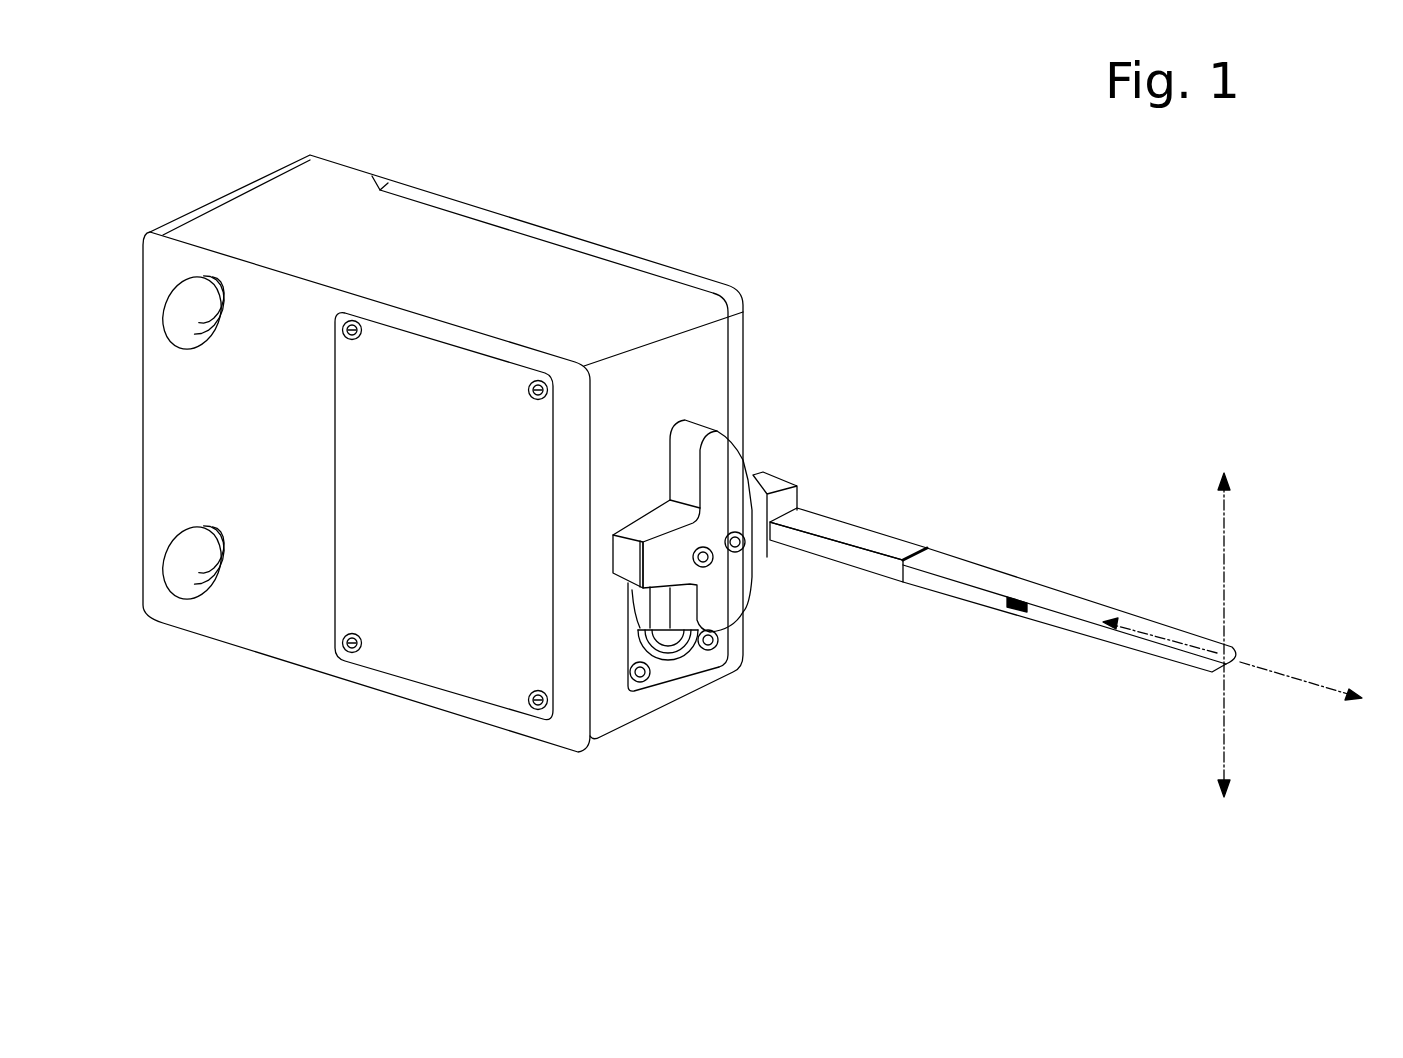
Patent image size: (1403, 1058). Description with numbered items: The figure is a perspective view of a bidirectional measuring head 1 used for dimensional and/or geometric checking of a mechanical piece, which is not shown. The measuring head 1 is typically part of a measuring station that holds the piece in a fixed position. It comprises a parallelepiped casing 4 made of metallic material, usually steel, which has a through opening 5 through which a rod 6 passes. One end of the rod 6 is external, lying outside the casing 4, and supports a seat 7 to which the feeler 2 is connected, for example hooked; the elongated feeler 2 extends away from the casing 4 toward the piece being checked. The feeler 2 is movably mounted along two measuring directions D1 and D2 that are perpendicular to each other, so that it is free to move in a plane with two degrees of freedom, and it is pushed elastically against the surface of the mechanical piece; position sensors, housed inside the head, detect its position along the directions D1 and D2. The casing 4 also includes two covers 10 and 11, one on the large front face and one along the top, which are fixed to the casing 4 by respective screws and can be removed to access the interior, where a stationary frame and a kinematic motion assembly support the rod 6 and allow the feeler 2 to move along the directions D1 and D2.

The measuring head 1 is at (808, 827).
The feeler 2 is at (1077, 615).
The casing 4 is at (270, 630).
The through opening 5 is at (665, 645).
The rod 6 is at (647, 612).
The seat 7 is at (693, 435).
The cover 10 is at (437, 662).
The cover 11 is at (555, 237).
The measuring direction D1 is at (1310, 682).
The measuring direction D2 is at (1224, 540).